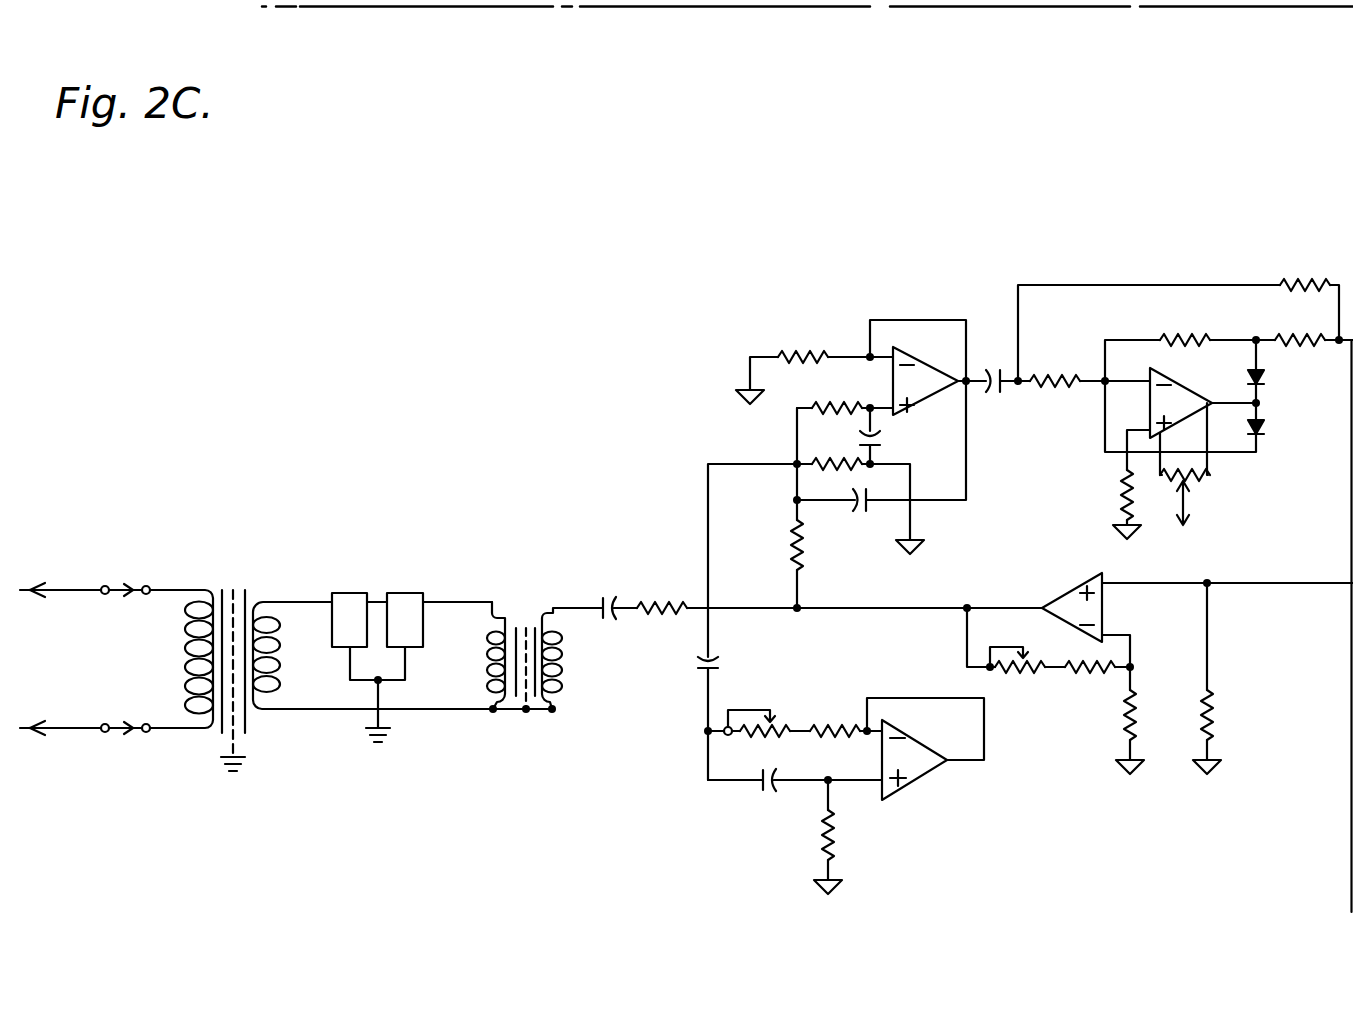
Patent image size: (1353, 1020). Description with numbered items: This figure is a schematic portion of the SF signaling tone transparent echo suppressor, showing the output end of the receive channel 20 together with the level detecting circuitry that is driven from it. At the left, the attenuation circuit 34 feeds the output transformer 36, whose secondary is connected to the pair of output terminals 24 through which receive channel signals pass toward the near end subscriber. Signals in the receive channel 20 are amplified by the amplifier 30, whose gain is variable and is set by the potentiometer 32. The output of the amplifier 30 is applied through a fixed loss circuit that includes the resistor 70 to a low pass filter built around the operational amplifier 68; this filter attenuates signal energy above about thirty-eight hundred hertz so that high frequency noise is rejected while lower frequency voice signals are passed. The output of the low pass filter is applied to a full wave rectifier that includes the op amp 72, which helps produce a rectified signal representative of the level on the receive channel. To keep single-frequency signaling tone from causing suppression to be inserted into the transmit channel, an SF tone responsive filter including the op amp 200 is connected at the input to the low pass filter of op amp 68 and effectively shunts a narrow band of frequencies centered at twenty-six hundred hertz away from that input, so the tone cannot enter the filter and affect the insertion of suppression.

The output terminals 24 is at (34, 732).
The output transformer 36 is at (237, 585).
The attenuation circuit 34 is at (392, 572).
The receive channel 20 is at (623, 785).
The resistor 70 is at (800, 556).
The operational amplifier 68 is at (921, 393).
The op amp 200 is at (935, 765).
The amplifier 30 is at (1070, 592).
The potentiometer 32 is at (1017, 668).
The op amp 72 is at (1183, 397).